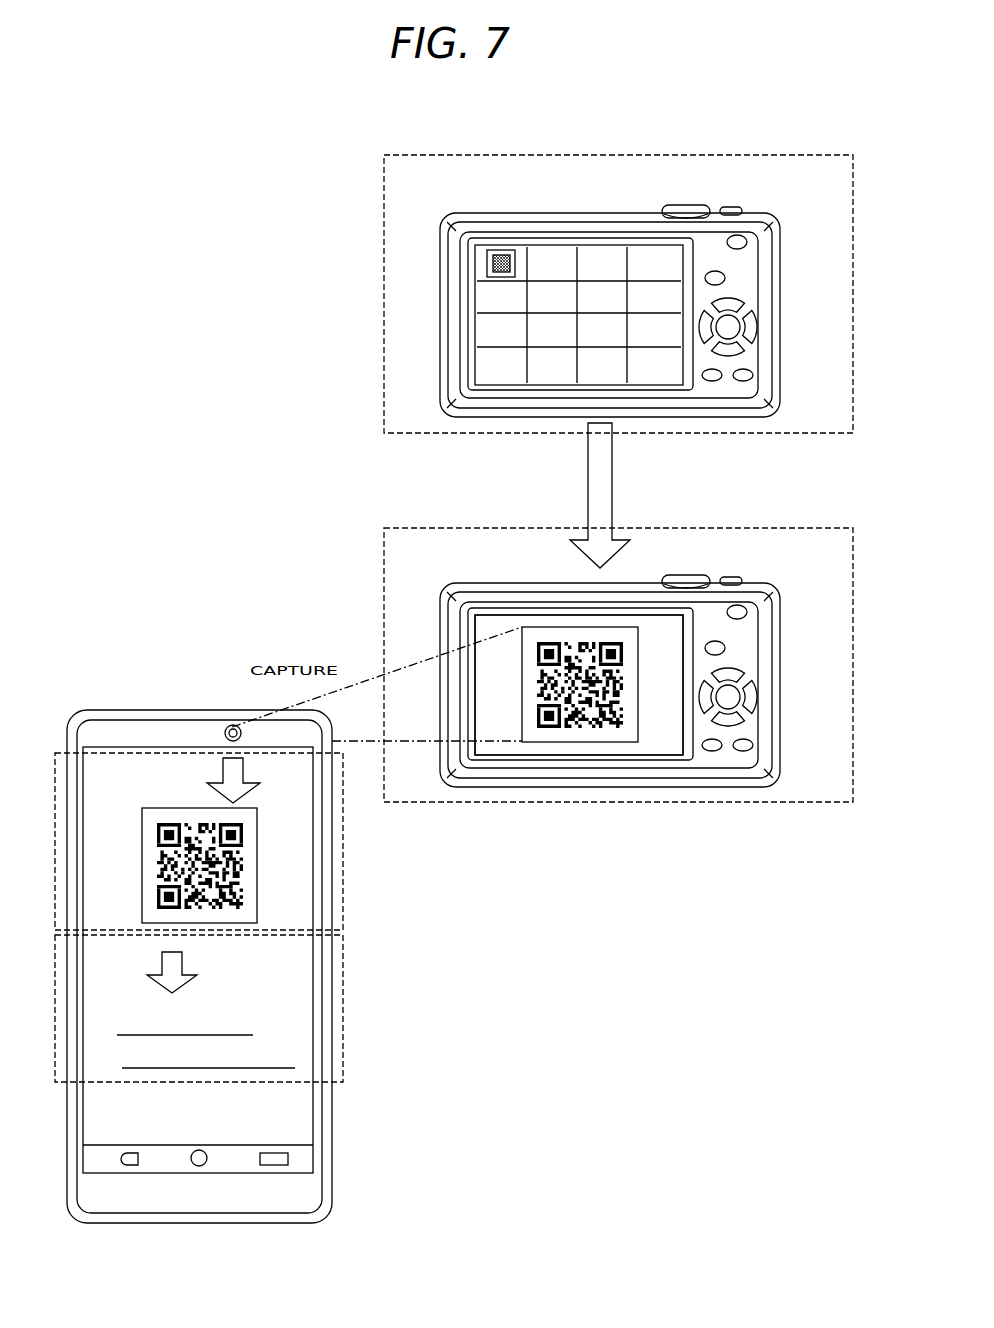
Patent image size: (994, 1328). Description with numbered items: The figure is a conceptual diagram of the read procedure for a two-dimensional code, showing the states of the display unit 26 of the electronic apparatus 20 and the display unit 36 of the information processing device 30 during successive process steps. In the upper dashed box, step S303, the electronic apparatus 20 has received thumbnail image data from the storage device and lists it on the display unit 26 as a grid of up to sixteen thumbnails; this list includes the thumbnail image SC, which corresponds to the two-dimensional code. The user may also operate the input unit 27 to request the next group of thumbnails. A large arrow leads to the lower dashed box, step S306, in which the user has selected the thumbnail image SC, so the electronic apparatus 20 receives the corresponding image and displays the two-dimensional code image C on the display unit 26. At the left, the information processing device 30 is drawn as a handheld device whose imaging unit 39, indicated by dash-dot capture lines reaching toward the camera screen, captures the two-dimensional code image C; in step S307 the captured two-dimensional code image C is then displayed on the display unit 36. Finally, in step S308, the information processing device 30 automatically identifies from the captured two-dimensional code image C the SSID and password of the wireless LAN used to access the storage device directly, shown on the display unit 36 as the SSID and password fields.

The electronic apparatus 20 is at (765, 256).
The display unit 26 is at (542, 550).
The input unit 27 is at (542, 365).
The thumbnail image SC is at (488, 263).
The two-dimensional code image C is at (552, 743).
The information processing device 30 is at (174, 946).
The display unit 36 is at (100, 1113).
The imaging unit 39 is at (232, 725).
The thumbnail display step S303 is at (787, 153).
The image display step S306 is at (787, 524).
The capture and display step S307 is at (345, 857).
The automatic identification step S308 is at (345, 1013).